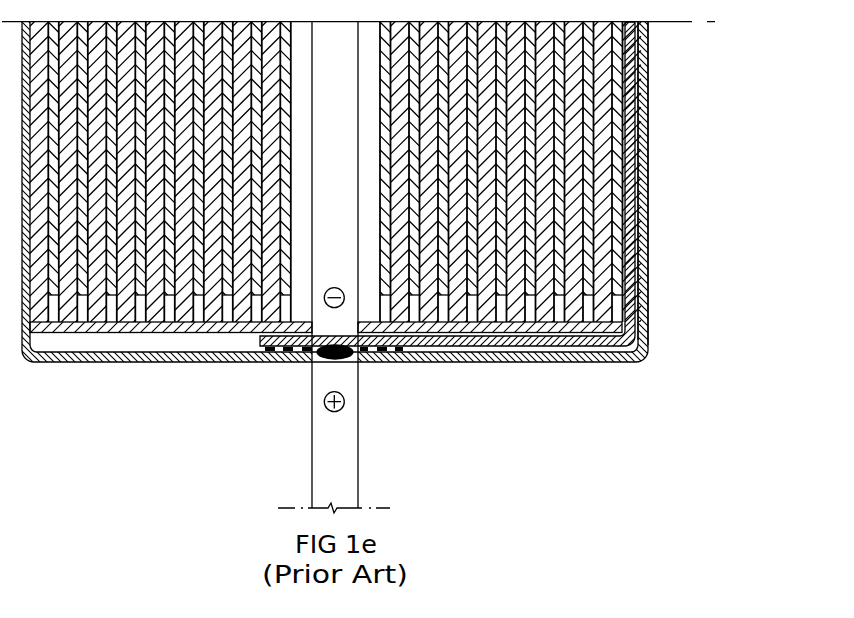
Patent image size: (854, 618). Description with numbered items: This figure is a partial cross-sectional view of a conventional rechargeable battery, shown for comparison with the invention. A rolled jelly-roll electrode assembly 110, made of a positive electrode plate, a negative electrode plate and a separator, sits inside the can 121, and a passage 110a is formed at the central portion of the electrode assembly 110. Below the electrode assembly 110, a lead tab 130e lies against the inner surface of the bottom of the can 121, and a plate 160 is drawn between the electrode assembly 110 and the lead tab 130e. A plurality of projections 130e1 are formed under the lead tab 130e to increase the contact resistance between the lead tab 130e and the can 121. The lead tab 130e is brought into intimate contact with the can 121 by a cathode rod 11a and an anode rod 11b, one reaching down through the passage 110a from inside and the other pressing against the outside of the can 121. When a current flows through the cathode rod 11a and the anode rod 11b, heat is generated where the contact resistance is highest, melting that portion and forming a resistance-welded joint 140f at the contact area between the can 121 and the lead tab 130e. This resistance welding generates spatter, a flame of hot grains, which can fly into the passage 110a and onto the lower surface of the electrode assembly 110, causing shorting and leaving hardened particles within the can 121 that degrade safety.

The electrode assembly 110 is at (637, 172).
The passage 110a is at (373, 244).
The can 121 is at (648, 94).
The insulating plate 160 is at (648, 330).
The lead tab 130e is at (484, 347).
The projections 130e1 is at (272, 352).
The resistance-welded joint 140f is at (362, 350).
The cathode rod 11a is at (352, 467).
The anode rod 11b is at (319, 258).